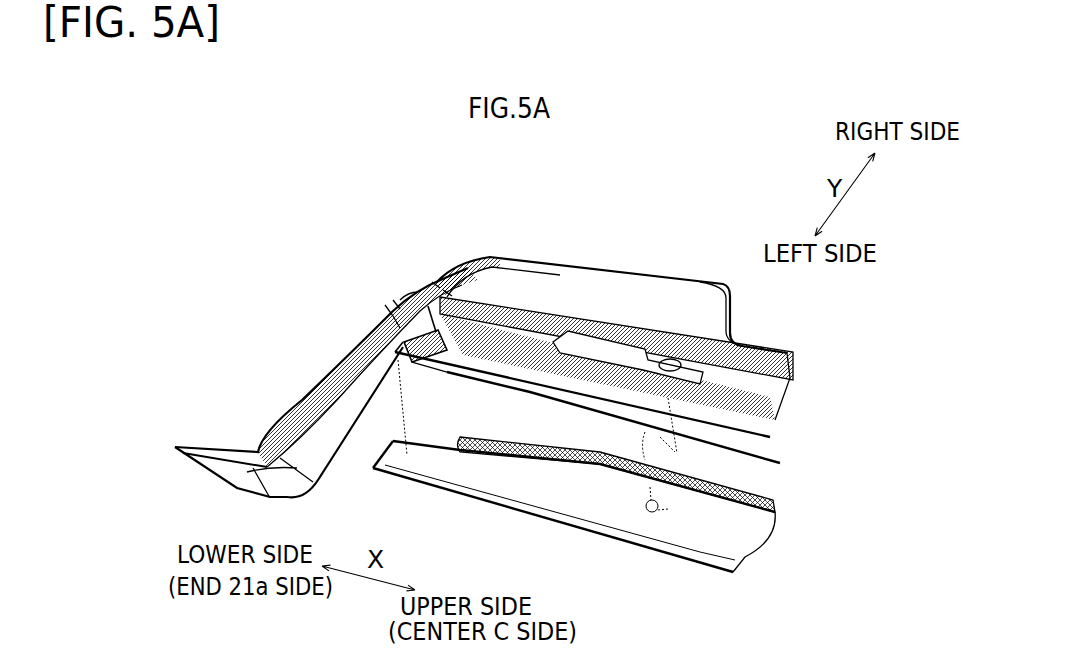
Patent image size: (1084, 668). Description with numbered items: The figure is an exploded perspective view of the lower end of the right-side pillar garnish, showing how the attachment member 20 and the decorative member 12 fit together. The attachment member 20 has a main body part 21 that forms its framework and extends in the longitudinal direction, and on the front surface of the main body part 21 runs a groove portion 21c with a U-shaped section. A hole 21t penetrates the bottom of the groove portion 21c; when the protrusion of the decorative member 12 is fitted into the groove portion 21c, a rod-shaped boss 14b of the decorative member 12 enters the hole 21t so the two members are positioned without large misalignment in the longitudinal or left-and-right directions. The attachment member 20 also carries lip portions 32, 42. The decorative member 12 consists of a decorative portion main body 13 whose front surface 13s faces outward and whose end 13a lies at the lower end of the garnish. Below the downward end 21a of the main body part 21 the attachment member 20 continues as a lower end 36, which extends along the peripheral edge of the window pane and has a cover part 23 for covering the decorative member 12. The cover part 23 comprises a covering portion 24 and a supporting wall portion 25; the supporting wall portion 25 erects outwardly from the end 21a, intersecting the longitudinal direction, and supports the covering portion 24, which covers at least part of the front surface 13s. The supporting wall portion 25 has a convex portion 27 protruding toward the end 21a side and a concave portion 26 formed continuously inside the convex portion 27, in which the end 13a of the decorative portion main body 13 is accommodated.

The decorative member 12 is at (559, 534).
The decorative portion main body 13 is at (627, 543).
The end of the decorative portion main body 13a is at (417, 460).
The front surface of the decorative portion main body 13s is at (707, 533).
The boss 14b is at (668, 509).
The attachment member 20 is at (529, 209).
The main body part 21 is at (573, 390).
The end of the main body part 21a is at (425, 385).
The groove portion 21c is at (627, 322).
The hole 21t is at (673, 345).
The cover part 23 is at (380, 304).
The covering portion 24 is at (410, 290).
The supporting wall portion 25 is at (438, 282).
The concave portion 26 is at (447, 287).
The convex portion 27 is at (398, 296).
The lip portion 32 is at (567, 270).
The lower end 36 is at (291, 377).
The lip portion 42 is at (515, 382).